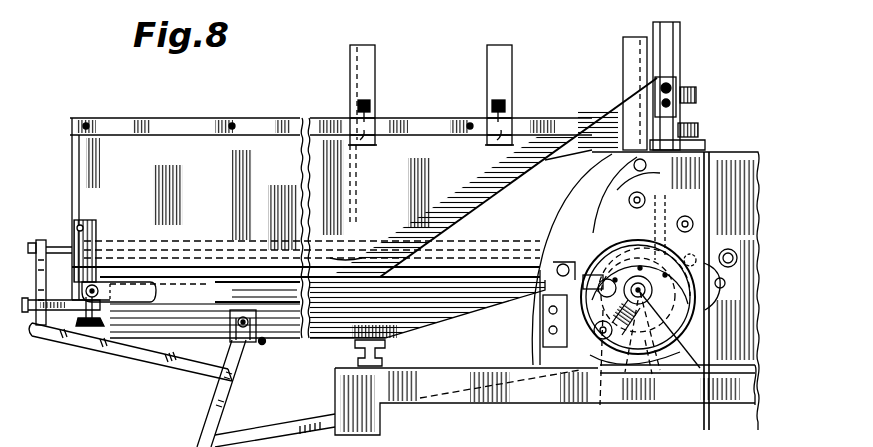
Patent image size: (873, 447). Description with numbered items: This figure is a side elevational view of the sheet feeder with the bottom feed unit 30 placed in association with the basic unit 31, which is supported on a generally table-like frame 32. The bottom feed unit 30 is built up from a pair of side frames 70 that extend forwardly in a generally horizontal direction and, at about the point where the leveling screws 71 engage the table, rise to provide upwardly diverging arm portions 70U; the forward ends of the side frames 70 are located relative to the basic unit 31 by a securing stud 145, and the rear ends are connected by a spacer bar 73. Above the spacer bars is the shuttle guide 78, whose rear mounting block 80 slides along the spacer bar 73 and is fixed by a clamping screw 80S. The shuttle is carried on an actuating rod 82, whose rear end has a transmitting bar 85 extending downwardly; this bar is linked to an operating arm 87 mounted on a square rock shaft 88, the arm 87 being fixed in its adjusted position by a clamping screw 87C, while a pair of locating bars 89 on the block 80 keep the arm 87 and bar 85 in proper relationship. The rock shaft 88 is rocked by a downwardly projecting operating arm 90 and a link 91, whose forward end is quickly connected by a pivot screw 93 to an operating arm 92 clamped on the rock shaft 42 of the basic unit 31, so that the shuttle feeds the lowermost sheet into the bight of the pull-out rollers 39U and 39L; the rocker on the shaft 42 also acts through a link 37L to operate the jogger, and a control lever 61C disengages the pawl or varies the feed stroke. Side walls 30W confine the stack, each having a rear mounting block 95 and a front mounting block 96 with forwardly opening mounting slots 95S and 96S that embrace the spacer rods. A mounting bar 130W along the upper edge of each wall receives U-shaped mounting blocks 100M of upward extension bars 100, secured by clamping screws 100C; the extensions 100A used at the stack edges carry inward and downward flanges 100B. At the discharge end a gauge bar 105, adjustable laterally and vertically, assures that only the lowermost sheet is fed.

The bottom feed unit 30 is at (333, 97).
The side walls 30W is at (200, 142).
The mounting bar 130W is at (147, 139).
The extensions 100A is at (370, 75).
The upward extension bars 100 is at (497, 58).
The clamping screw 100C is at (503, 110).
The U-shaped mounting block 100M is at (362, 150).
The flanges 100B is at (352, 218).
The upwardly diverging arm portions 70U is at (607, 118).
The gauge bar 105 is at (672, 42).
The basic unit 31 is at (742, 148).
The securing stud 145 is at (550, 198).
The upper pull-out roller 39U is at (704, 194).
The lower pull-out roller 39L is at (694, 287).
The mounting slot 96S is at (628, 250).
The front mounting block 96 is at (545, 282).
The actuating rod 82 is at (58, 247).
The transmitting bar 85 is at (42, 240).
The rear mounting block 95 is at (93, 230).
The mounting slot 95S is at (110, 290).
The mounting block 80 is at (105, 270).
The clamping screw 80S is at (83, 325).
The shuttle guide 78 is at (363, 262).
The locating bars 89 is at (186, 296).
The rock shaft 88 is at (250, 318).
The operating arm 87 is at (240, 354).
The clamping screw 87C is at (266, 345).
The side frames 70 is at (447, 292).
The leveling screws 71 is at (380, 350).
The spacer bar 73 is at (108, 313).
The operating arm 90 is at (205, 402).
The link 91 is at (238, 435).
The frame 32 is at (412, 400).
The link 37L is at (743, 408).
The rock shaft 42 is at (686, 337).
The operating arm 92 is at (662, 370).
The pivot screw 93 is at (600, 405).
The control lever 61C is at (640, 377).